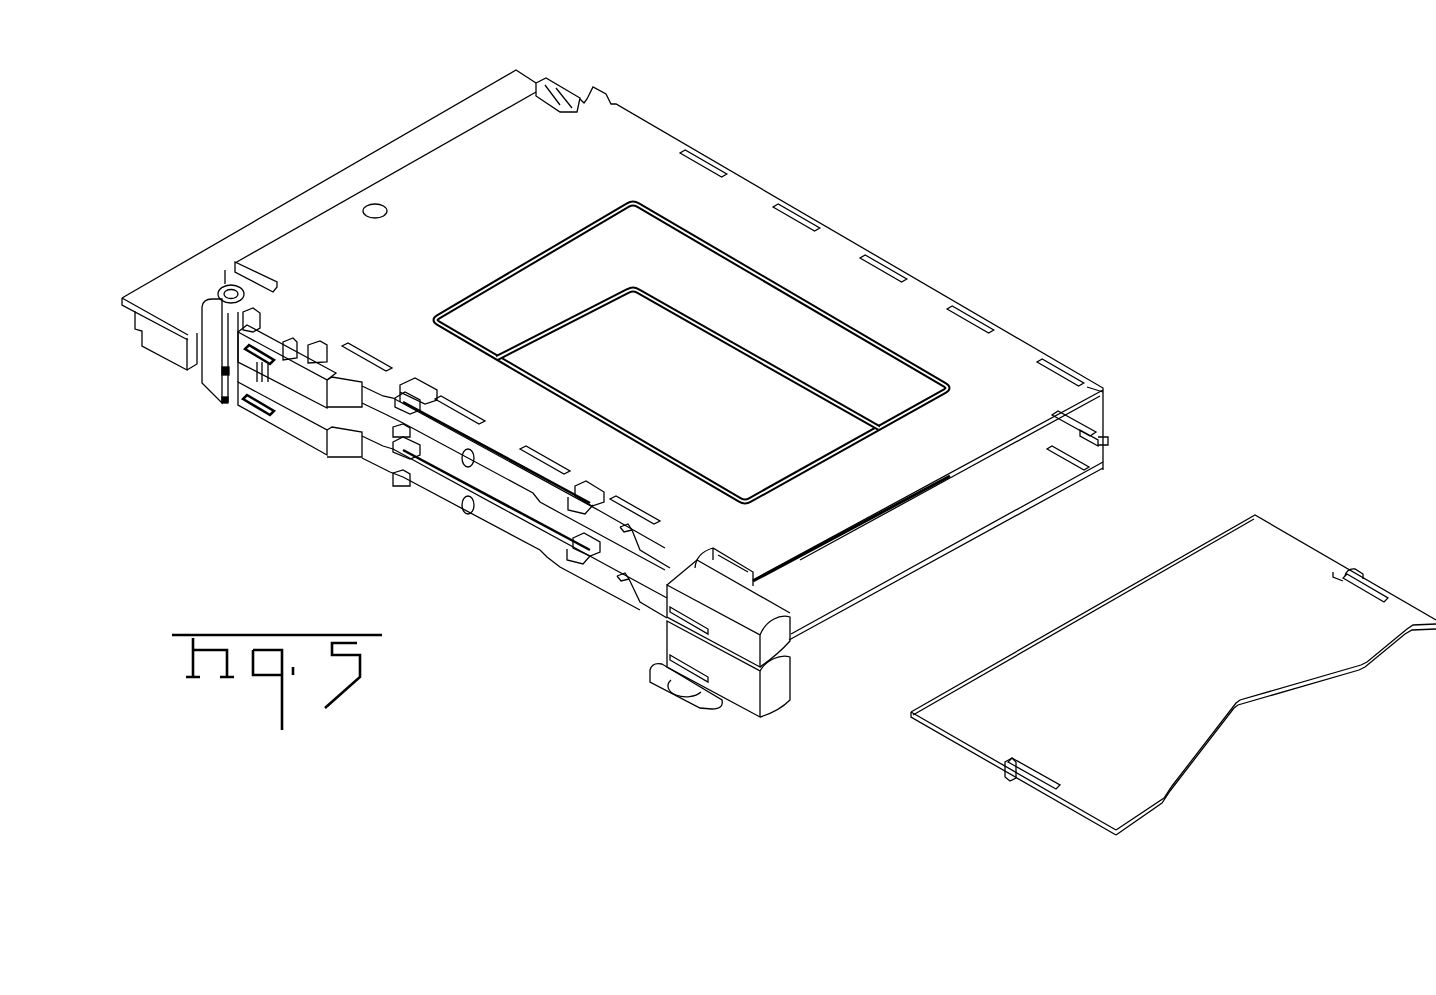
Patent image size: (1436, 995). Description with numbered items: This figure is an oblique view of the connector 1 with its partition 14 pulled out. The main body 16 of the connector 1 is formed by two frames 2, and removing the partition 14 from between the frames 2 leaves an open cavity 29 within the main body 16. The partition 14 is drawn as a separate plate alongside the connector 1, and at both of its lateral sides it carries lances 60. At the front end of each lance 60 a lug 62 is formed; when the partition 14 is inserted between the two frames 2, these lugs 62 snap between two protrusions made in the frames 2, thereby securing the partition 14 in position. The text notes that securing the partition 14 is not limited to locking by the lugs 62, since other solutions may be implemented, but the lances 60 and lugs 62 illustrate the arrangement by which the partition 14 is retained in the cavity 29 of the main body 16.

The connector 1 is at (810, 135).
The main body 16 is at (855, 230).
The frame 2 is at (1007, 370).
The cavity 29 is at (872, 543).
The partition 14 is at (1198, 672).
The lance 60 is at (1033, 789).
The lug 62 is at (1005, 771).